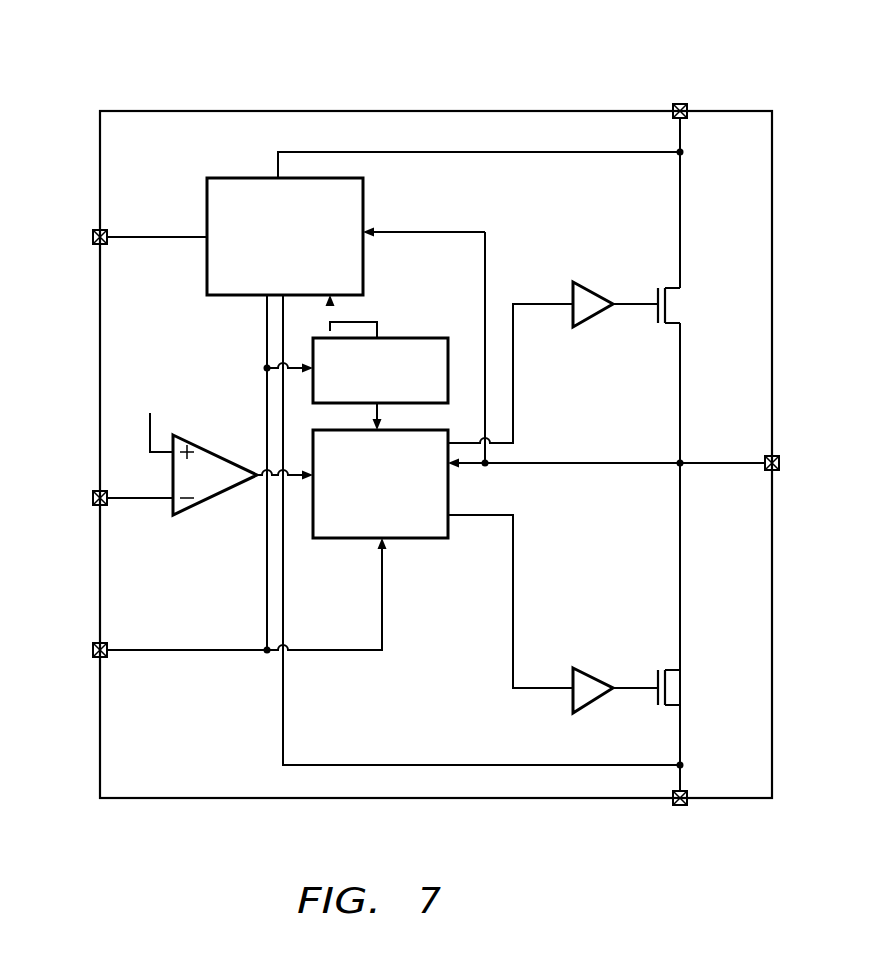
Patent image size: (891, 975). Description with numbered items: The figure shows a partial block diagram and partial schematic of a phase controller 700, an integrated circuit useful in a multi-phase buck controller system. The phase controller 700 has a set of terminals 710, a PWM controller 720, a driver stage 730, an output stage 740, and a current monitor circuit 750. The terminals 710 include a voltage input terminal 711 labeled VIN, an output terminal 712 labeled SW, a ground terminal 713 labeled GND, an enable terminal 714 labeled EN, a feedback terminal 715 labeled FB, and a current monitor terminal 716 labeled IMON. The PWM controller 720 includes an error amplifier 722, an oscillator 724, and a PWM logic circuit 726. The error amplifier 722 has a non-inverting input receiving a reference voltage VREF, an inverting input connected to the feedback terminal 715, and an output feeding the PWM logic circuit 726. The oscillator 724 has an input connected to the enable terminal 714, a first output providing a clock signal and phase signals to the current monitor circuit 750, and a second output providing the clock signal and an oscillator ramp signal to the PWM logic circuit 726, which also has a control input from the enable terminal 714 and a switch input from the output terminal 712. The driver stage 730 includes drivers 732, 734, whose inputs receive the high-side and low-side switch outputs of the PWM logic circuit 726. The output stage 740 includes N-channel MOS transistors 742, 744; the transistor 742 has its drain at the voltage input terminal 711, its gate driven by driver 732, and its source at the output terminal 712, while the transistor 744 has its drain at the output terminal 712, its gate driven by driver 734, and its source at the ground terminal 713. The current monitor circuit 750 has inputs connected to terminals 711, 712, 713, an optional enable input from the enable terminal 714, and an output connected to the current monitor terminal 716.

The phase controller 700 is at (100, 170).
The set of terminals 710 is at (108, 95).
The voltage input terminal 711 is at (674, 104).
The output terminal 712 is at (780, 456).
The ground terminal 713 is at (690, 806).
The enable terminal 714 is at (96, 658).
The feedback terminal 715 is at (96, 506).
The current monitor terminal 716 is at (96, 245).
The PWM controller 720 is at (187, 510).
The error amplifier 722 is at (206, 502).
The oscillator 724 is at (408, 338).
The PWM logic circuit 726 is at (428, 540).
The driver stage 730 is at (579, 288).
The driver 732 is at (590, 325).
The driver 734 is at (586, 670).
The output stage 740 is at (649, 288).
The N-channel MOS transistor 742 is at (668, 325).
The N-channel MOS transistor 744 is at (668, 668).
The current monitor circuit 750 is at (235, 178).